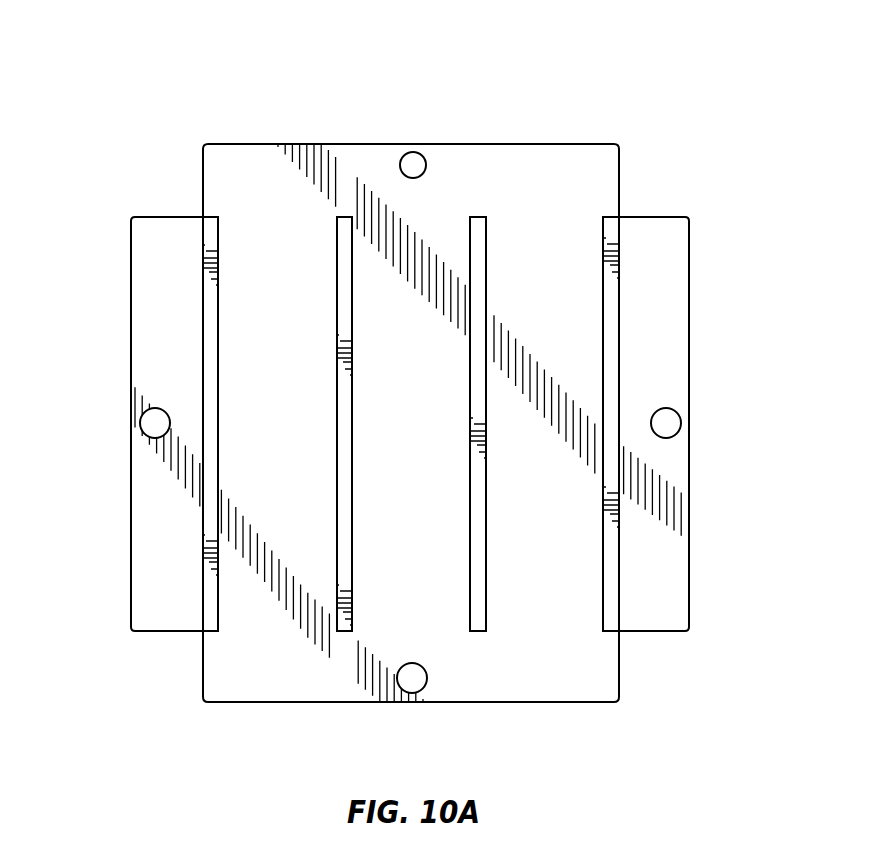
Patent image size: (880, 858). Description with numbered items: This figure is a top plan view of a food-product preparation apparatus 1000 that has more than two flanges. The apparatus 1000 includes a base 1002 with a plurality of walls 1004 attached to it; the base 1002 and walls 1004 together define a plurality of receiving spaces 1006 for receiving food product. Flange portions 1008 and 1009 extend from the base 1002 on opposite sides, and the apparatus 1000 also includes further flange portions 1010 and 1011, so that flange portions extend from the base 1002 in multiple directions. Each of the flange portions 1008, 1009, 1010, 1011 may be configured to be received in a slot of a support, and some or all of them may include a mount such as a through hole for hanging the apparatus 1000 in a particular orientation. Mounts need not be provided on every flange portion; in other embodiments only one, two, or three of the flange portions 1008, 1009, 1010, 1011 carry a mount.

The food-product preparation apparatus 1000 is at (680, 88).
The base 1002 is at (293, 525).
The walls 1004 is at (207, 607).
The receiving spaces 1006 is at (303, 421).
The flange portion 1008 is at (153, 323).
The flange portion 1009 is at (668, 302).
The flange portion 1010 is at (466, 160).
The flange portion 1011 is at (603, 692).